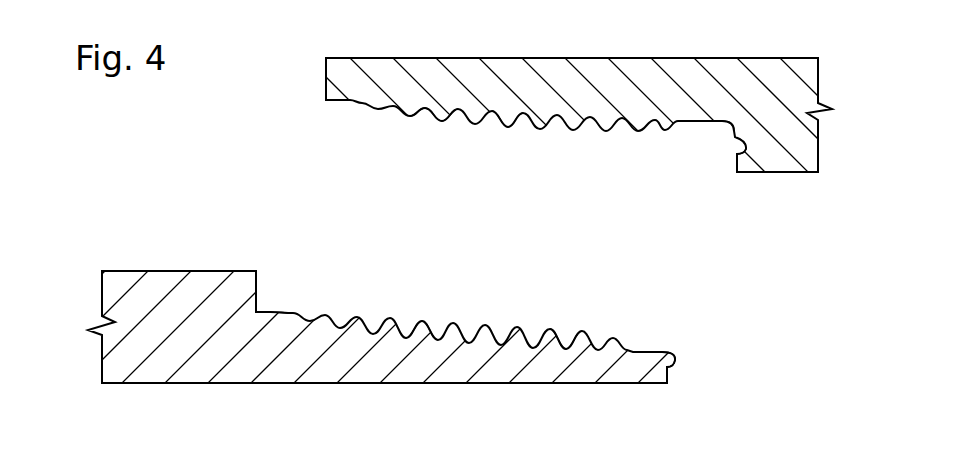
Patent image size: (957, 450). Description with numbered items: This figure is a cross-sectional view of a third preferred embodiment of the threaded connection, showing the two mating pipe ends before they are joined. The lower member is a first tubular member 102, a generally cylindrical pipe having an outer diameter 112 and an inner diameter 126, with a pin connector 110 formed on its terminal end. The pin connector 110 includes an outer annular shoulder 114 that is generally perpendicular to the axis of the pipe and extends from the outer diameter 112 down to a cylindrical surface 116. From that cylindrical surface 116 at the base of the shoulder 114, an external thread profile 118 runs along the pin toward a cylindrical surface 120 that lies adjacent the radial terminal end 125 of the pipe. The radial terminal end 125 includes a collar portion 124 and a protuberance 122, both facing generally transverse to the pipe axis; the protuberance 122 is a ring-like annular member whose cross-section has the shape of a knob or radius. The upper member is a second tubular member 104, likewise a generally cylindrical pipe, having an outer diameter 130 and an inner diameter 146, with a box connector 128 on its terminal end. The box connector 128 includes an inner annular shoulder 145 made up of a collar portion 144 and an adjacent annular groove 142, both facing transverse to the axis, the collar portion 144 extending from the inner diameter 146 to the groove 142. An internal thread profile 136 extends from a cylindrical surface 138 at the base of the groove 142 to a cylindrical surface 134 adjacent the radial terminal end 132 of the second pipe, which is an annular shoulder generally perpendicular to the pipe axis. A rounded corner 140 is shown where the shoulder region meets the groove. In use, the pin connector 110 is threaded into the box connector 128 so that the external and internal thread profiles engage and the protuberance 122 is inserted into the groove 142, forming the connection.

The first tubular member 102 is at (198, 372).
The second tubular member 104 is at (726, 78).
The pin connector 110 is at (586, 295).
The outer diameter 112 is at (170, 270).
The outer annular shoulder 114 is at (258, 273).
The cylindrical surface 116 is at (270, 313).
The external thread profile 118 is at (422, 320).
The cylindrical surface 120 is at (658, 352).
The protuberance 122 is at (678, 360).
The collar portion 124 is at (667, 378).
The radial terminal end 125 is at (682, 370).
The inner diameter 126 is at (362, 385).
The box connector 128 is at (436, 141).
The outer diameter 130 is at (462, 58).
The radial terminal end 132 is at (326, 58).
The cylindrical surface 134 is at (336, 101).
The internal thread profile 136 is at (510, 128).
The cylindrical surface 138 is at (697, 122).
The rounded corner 140 is at (732, 134).
The annular groove 142 is at (764, 172).
The collar portion 144 is at (729, 163).
The inner annular shoulder 145 is at (726, 158).
The inner diameter 146 is at (782, 173).